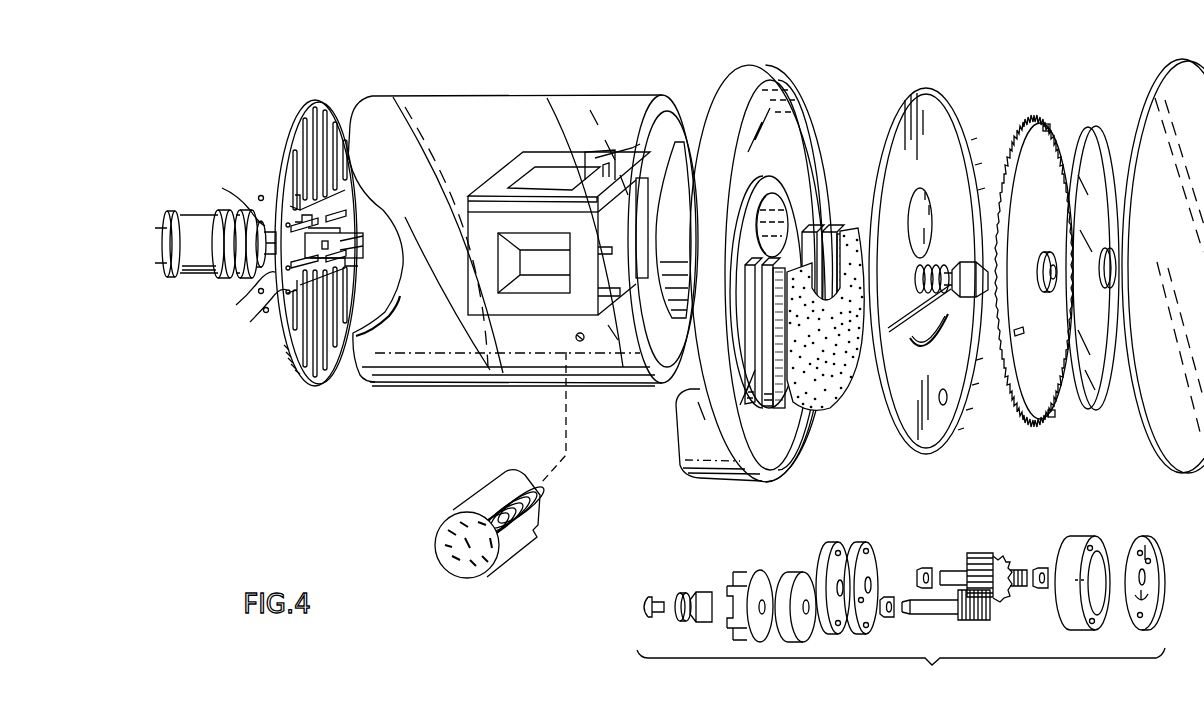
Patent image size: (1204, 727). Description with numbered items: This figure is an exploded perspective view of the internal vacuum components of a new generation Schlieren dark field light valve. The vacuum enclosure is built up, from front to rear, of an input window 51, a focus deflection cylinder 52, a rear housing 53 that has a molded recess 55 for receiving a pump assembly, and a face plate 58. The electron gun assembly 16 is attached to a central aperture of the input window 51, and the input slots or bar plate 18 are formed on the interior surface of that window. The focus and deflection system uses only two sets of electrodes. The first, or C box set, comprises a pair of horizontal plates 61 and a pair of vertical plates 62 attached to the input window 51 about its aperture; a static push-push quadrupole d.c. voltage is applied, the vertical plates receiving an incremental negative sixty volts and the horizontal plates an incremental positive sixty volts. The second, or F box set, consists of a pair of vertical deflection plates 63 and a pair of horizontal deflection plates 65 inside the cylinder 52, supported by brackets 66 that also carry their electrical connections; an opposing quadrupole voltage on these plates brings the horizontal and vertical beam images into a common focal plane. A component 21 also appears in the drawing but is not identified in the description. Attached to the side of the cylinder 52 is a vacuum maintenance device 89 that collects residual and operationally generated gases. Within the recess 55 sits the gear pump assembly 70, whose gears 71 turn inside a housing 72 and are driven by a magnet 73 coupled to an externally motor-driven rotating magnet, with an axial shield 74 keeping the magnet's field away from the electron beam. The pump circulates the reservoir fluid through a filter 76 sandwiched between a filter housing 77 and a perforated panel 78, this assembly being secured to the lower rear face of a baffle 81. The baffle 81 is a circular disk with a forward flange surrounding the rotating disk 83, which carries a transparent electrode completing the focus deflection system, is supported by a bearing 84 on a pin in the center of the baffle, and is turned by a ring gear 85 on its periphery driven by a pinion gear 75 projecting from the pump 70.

The electron gun assembly 16 is at (196, 280).
The input slots or bar plate 18 is at (328, 365).
The bearing bracket 21 is at (673, 172).
The input window 51 is at (316, 237).
The focus deflection cylinder 52 is at (421, 97).
The rear housing 53 is at (813, 108).
The molded recess 55 is at (695, 477).
The face plate 58 is at (1148, 78).
The horizontal plates 61 is at (363, 241).
The vertical plates 62 is at (360, 263).
The vertical deflection plates 63 is at (526, 165).
The horizontal deflection plates 65 is at (497, 315).
The brackets 66 is at (612, 152).
The gear pump assembly 70 is at (901, 595).
The gears 71 is at (975, 553).
The housing 72 is at (1085, 537).
The magnet 73 is at (745, 578).
The axial shield 74 is at (793, 571).
The pinion gear 75 is at (1018, 566).
The filter 76 is at (807, 414).
The filter housing 77 is at (768, 408).
The perforated panel 78 is at (847, 378).
The baffle 81 is at (910, 92).
The rotating disk 83 is at (1093, 410).
The bearing 84 is at (1052, 252).
The ring gear 85 is at (1034, 283).
The vacuum maintenance device 89 is at (458, 506).